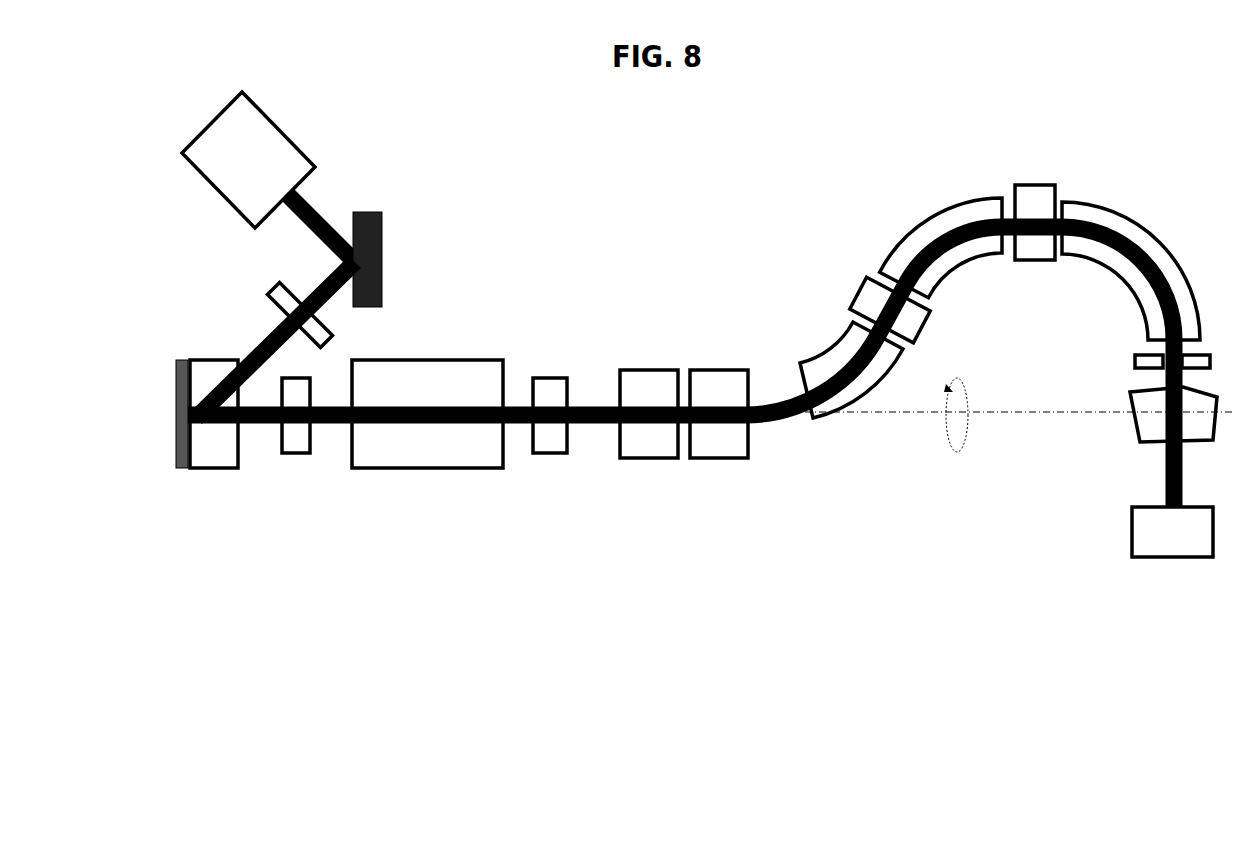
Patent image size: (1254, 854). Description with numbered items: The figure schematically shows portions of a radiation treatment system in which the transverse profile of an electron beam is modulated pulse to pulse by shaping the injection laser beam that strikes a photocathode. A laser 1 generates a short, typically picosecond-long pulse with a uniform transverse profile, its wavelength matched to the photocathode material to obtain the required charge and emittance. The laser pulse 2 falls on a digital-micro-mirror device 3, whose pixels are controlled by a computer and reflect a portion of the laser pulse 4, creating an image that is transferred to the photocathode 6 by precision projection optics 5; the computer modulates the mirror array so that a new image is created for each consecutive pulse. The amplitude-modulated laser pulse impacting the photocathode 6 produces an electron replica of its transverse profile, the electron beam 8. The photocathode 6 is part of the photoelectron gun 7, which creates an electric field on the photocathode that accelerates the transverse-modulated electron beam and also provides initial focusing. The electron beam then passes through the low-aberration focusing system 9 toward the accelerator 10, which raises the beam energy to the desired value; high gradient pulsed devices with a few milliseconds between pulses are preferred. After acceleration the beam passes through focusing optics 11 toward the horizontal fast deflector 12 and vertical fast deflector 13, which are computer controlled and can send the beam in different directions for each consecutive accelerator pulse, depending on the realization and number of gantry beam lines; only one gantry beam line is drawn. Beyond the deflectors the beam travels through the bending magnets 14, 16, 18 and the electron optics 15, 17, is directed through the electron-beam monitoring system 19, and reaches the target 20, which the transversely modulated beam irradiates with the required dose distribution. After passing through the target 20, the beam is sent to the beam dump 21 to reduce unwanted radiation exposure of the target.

The laser 1 is at (268, 152).
The laser pulse 2 is at (319, 197).
The digital-micro-mirror device 3 is at (394, 264).
The reflected portion of the laser pulse 4 is at (332, 309).
The precision projection optics 5 is at (285, 300).
The photocathode 6 is at (176, 360).
The photoelectron gun 7 is at (212, 445).
The electron beam 8 is at (253, 434).
The low-aberration focusing system 9 is at (297, 440).
The accelerator 10 is at (400, 443).
The focusing optics 11 is at (550, 443).
The horizontal fast deflector 12 is at (635, 443).
The vertical fast deflector 13 is at (712, 442).
The bending magnet 14 is at (833, 367).
The electron optics 15 is at (913, 318).
The bending magnet 16 is at (950, 265).
The electron optics 17 is at (1033, 247).
The bending magnet 18 is at (1140, 283).
The electron-beam monitoring system 19 is at (1128, 362).
The target 20 is at (1126, 434).
The beam dump 21 is at (1152, 527).